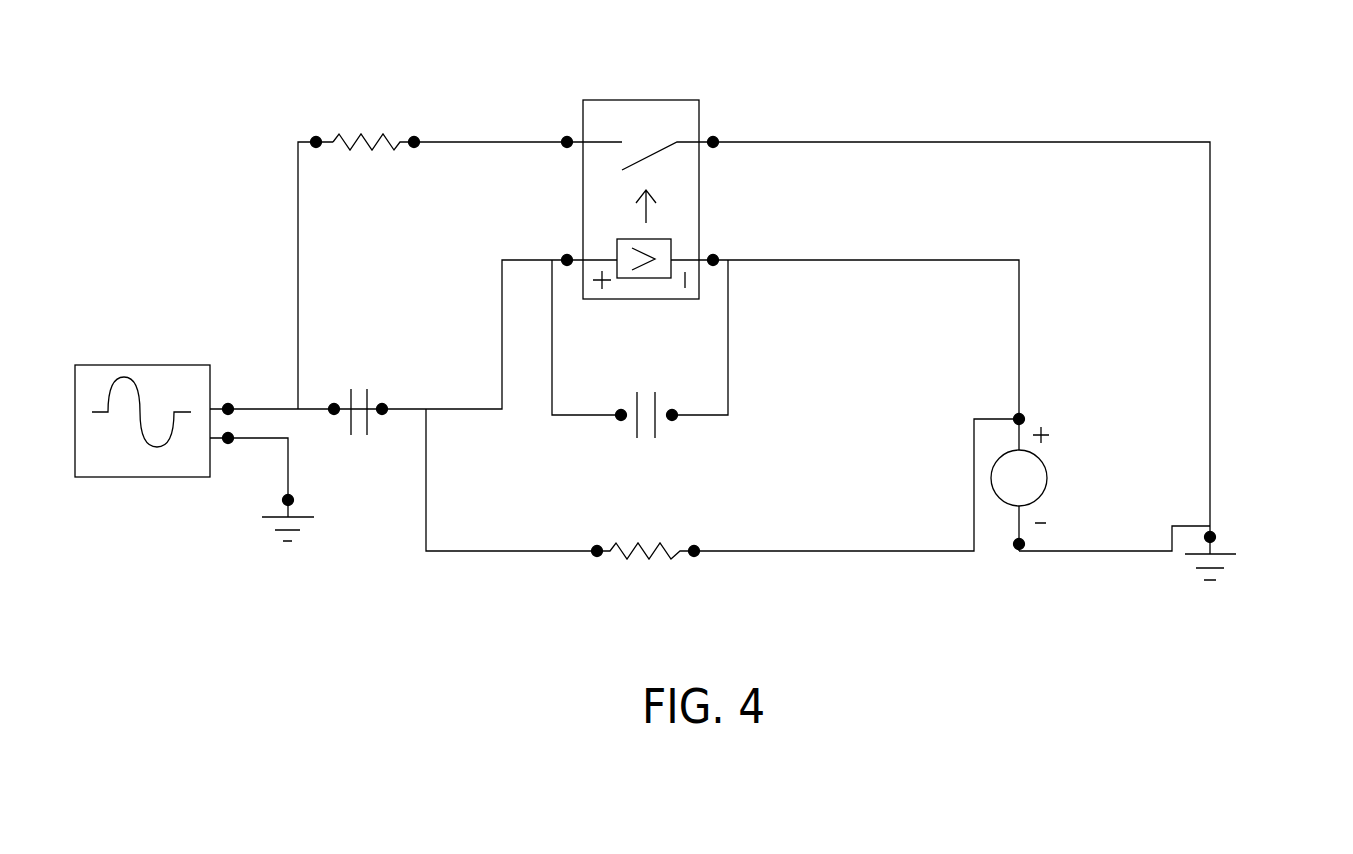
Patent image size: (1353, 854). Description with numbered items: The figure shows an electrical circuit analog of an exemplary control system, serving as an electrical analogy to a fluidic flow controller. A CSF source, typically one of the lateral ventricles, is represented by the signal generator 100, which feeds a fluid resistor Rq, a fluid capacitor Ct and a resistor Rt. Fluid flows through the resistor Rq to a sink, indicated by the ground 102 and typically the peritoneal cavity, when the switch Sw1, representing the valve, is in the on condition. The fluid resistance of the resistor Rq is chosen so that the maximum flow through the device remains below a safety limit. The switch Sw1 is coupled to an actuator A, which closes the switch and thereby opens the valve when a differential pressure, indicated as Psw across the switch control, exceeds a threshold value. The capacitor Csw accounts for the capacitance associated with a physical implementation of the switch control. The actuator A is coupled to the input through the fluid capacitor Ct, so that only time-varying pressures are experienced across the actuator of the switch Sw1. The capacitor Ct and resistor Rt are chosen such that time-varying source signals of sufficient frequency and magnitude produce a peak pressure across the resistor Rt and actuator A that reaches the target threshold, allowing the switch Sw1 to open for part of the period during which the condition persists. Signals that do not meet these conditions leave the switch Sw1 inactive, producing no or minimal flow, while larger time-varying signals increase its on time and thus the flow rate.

The signal generator 100 is at (158, 365).
The ground 102 is at (1223, 553).
The fluid resistor Rq is at (432, 227).
The fluid capacitor Ct is at (358, 375).
The switch Sw1 is at (643, 142).
The actuator A is at (662, 239).
The capacitor Csw is at (646, 330).
The resistor Rt is at (640, 378).
The switch control pressure Psw is at (1053, 483).